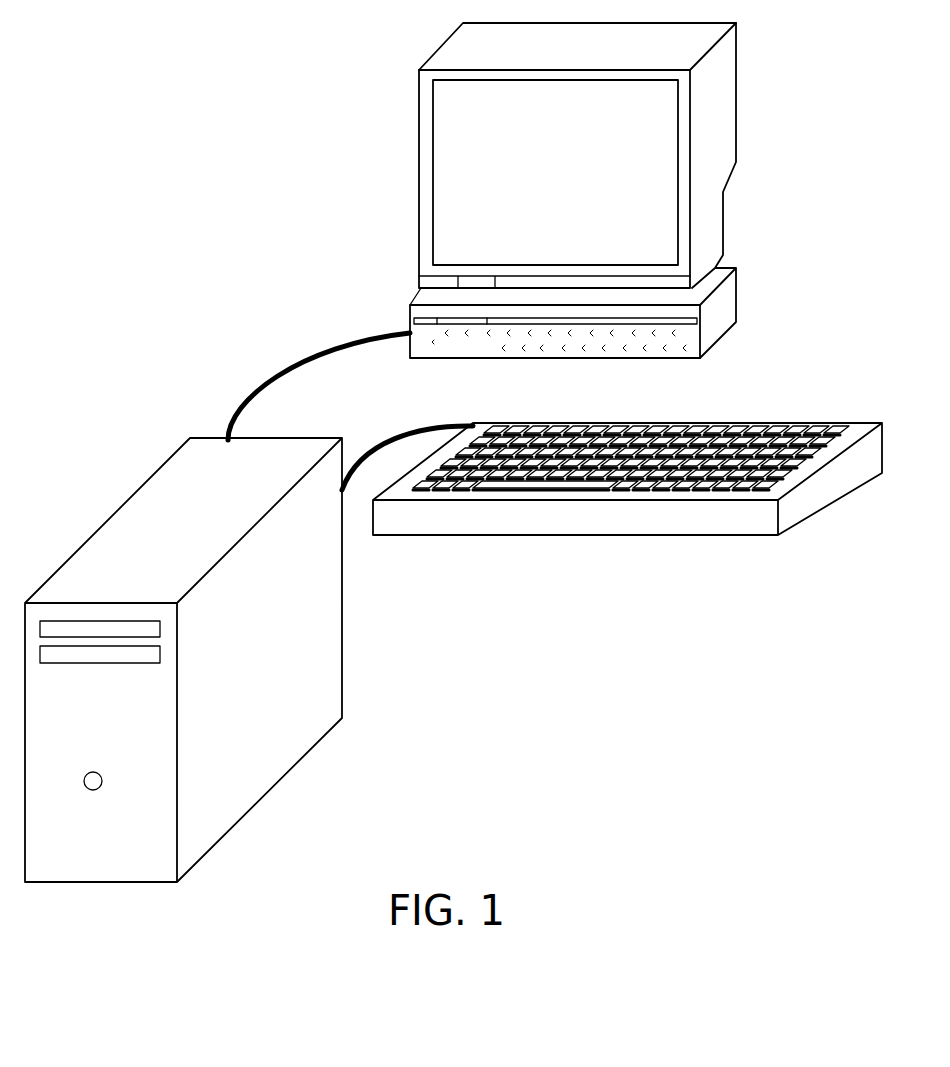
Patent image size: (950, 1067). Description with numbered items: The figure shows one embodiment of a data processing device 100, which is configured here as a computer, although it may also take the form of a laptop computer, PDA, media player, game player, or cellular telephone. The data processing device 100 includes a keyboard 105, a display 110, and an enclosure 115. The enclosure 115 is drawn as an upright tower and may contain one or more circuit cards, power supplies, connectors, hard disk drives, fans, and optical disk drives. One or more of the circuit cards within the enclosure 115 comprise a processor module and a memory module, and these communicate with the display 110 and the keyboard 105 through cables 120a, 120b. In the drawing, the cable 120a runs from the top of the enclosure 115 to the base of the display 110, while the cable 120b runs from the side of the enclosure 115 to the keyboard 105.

The data processing device 100 is at (176, 59).
The keyboard 105 is at (602, 535).
The display 110 is at (419, 116).
The enclosure 115 is at (173, 455).
The cable 120a is at (305, 357).
The cable 120b is at (417, 430).